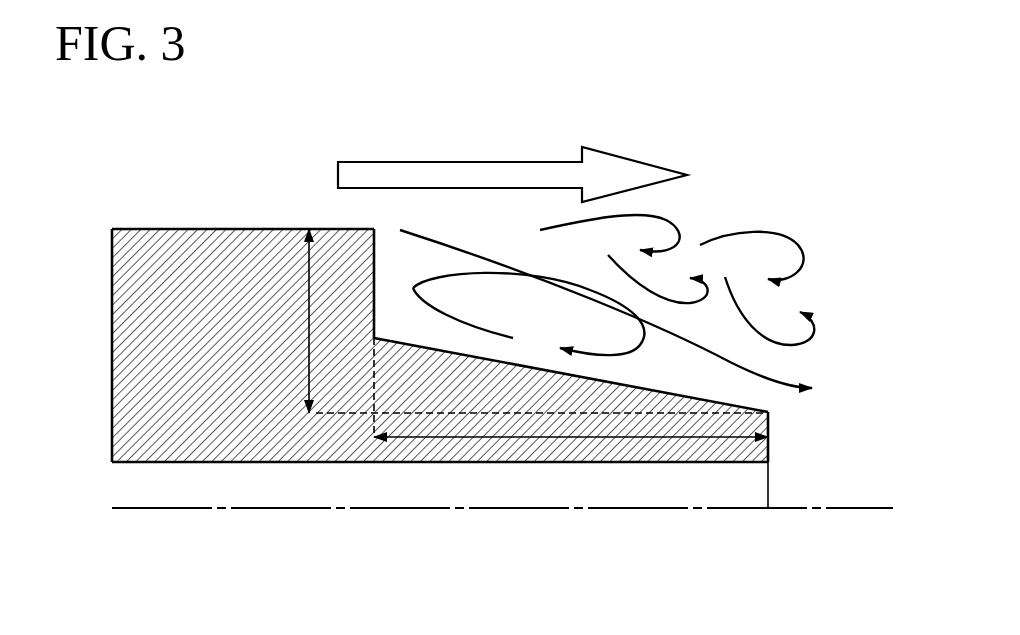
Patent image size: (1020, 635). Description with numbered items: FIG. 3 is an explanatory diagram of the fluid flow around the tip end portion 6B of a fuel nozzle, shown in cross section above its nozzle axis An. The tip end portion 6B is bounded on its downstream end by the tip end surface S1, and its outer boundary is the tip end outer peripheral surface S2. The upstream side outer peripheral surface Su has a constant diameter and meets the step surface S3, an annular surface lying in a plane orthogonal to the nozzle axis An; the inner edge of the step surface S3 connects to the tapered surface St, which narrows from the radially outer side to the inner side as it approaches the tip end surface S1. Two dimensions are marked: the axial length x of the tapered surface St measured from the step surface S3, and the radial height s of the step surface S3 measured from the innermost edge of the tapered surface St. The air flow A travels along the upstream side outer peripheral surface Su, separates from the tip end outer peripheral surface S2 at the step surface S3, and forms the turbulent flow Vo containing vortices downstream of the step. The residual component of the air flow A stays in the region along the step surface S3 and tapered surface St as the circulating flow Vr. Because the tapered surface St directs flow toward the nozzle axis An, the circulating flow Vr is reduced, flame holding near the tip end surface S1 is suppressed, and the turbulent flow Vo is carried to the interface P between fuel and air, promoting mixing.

The tip end portion 6B is at (618, 241).
The tip end outer peripheral surface S2 is at (440, 364).
The upstream side outer peripheral surface Su is at (187, 229).
The tapered surface St is at (610, 383).
The step surface S3 is at (376, 275).
The tip end surface S1 is at (768, 448).
The nozzle axis An is at (278, 508).
The dimension of the step surface in the radial direction s is at (517, 321).
The dimension of the tapered surface in the nozzle axis direction x is at (469, 440).
The air flow A is at (512, 162).
The interface between the fuel and the air P is at (618, 318).
The circulating flow Vr is at (528, 314).
The turbulent flow Vo is at (677, 265).